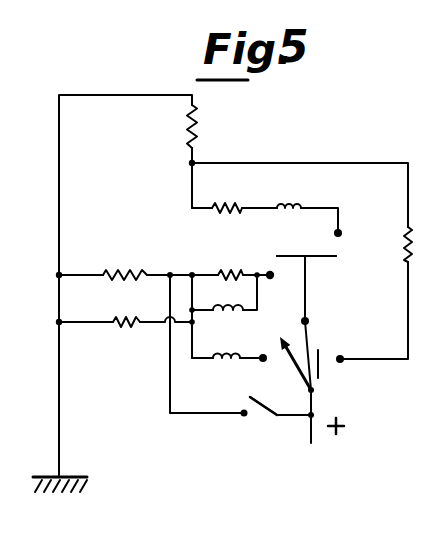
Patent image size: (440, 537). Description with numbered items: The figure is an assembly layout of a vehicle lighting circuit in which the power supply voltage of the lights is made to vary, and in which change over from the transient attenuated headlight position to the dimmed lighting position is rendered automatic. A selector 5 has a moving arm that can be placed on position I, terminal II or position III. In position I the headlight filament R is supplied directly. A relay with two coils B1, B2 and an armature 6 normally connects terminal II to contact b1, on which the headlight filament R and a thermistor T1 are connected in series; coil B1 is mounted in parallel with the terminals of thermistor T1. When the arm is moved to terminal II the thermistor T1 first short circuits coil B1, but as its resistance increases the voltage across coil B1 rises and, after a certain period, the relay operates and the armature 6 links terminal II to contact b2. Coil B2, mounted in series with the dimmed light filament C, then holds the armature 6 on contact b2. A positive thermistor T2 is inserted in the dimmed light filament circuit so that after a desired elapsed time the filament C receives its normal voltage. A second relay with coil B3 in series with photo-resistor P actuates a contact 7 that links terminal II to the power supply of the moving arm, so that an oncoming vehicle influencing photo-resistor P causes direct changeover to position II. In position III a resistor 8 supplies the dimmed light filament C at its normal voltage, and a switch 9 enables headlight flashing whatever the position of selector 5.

The dimmed light filament C is at (188, 126).
The positive thermistor T2 is at (221, 191).
The relay coil B2 is at (283, 192).
The relay contact b2 is at (350, 226).
The resistor 8 is at (405, 245).
The armature 6 is at (316, 256).
The headlight filament R is at (117, 270).
The thermistor T1 is at (221, 272).
The relay contact b1 is at (277, 290).
The photo-resistor P is at (122, 326).
The relay coil B1 is at (218, 312).
The relay coil B3 is at (218, 364).
The selector position I is at (260, 348).
The selector terminal II is at (315, 318).
The selector position III is at (346, 348).
The selector 5 is at (294, 367).
The contact 7 is at (324, 361).
The switch 9 is at (264, 410).